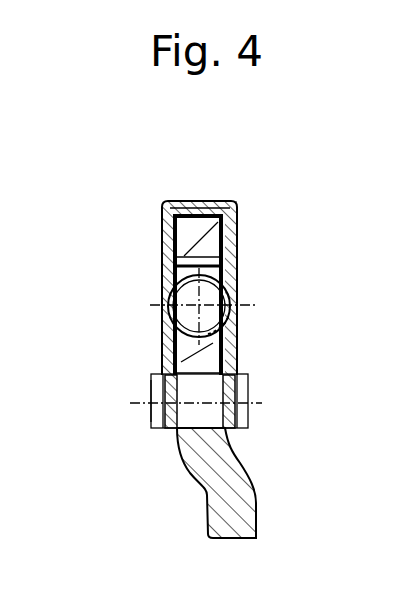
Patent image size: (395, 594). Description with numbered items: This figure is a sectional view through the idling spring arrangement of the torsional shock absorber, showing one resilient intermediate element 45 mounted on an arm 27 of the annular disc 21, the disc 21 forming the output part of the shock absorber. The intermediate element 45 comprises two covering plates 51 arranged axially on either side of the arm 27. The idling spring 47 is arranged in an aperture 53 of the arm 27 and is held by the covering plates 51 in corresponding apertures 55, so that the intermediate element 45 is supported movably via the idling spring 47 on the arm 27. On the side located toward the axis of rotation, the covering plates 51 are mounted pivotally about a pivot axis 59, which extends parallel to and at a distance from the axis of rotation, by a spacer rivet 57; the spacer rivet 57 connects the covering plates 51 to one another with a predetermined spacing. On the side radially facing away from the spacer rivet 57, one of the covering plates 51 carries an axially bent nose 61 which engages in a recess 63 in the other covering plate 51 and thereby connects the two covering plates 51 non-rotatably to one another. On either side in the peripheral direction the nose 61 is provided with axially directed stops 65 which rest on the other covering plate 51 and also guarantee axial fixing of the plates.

The intermediate element 45 is at (159, 190).
The arm 27 is at (200, 236).
The nose 61 is at (207, 208).
The stops 65 is at (239, 203).
The recess 63 is at (227, 213).
The covering plates 51 is at (168, 242).
The aperture 53 is at (170, 287).
The idling spring 47 is at (238, 297).
The apertures 55 is at (170, 331).
The spacer rivet 57 is at (245, 420).
The pivot axis 59 is at (147, 405).
The disc 21 is at (192, 463).